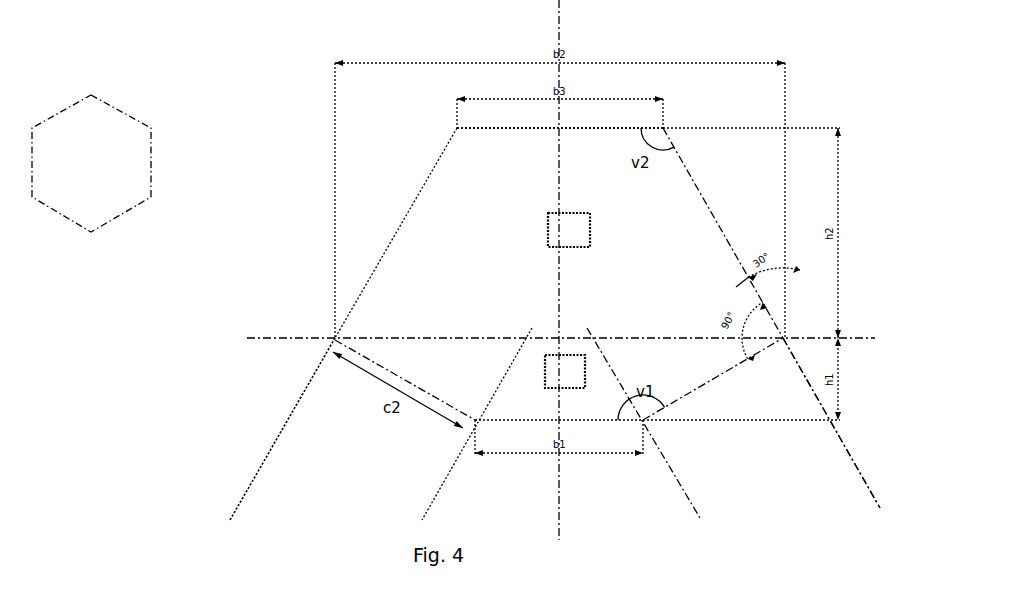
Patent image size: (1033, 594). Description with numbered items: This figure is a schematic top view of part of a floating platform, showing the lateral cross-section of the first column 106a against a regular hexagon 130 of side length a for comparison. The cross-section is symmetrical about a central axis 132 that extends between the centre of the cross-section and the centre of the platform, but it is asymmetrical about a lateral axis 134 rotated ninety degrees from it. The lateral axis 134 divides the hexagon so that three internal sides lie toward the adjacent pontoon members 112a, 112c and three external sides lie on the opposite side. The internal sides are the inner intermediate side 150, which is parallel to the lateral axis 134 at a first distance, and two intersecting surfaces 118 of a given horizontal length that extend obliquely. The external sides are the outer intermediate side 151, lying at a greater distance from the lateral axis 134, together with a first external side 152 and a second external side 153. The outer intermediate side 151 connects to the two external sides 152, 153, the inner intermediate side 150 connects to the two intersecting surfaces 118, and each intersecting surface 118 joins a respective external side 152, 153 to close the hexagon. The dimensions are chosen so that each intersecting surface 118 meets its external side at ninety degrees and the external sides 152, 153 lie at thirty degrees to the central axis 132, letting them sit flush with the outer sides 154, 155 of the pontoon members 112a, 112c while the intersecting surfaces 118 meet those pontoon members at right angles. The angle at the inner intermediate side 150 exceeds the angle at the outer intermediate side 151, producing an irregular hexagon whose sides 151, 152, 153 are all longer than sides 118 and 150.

The regular hexagon 130 is at (107, 195).
The central axis 132 is at (559, 33).
The lateral axis 134 is at (283, 338).
The first column 106a is at (395, 255).
The outer intermediate side 151 is at (533, 130).
The first external side 152 is at (408, 212).
The second external side 153 is at (700, 198).
The outer side of pontoon member 154 is at (270, 447).
The outer side of pontoon member 155 is at (850, 445).
The first pontoon member 112a is at (280, 475).
The third pontoon member 112c is at (832, 465).
The inner intermediate side 150 is at (600, 420).
The intersecting surface 118 is at (412, 383).